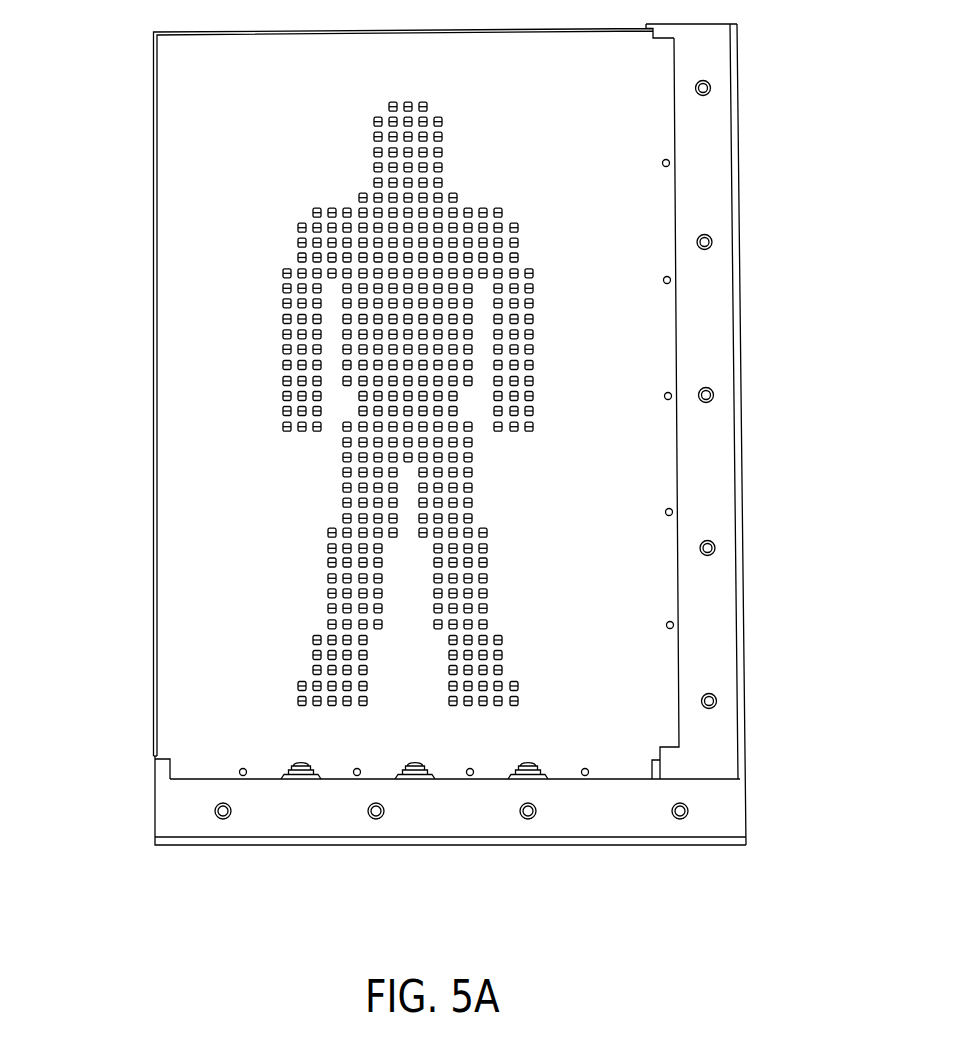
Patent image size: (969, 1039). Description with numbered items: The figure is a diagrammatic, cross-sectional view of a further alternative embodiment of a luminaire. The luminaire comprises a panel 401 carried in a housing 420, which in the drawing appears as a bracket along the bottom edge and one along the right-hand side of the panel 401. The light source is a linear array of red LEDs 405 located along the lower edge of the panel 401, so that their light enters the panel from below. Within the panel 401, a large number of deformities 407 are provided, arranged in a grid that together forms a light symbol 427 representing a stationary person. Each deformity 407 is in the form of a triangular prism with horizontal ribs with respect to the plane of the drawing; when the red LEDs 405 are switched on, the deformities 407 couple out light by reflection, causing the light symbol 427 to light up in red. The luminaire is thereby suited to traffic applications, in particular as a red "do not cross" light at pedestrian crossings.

The panel 401 is at (134, 331).
The light symbol 427 is at (280, 203).
The deformity 407 is at (519, 702).
The red LED 405 is at (302, 762).
The housing 420 is at (732, 822).